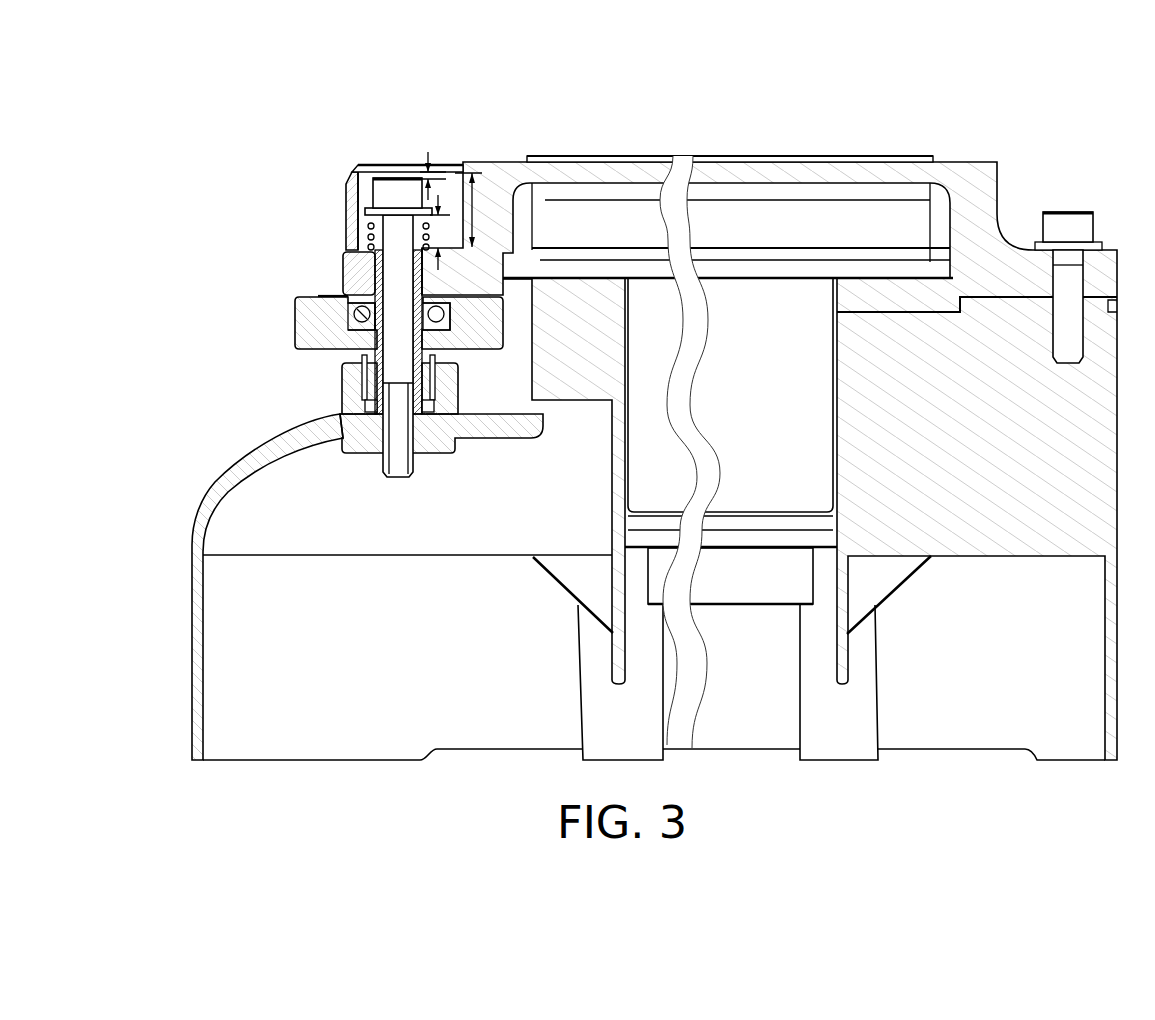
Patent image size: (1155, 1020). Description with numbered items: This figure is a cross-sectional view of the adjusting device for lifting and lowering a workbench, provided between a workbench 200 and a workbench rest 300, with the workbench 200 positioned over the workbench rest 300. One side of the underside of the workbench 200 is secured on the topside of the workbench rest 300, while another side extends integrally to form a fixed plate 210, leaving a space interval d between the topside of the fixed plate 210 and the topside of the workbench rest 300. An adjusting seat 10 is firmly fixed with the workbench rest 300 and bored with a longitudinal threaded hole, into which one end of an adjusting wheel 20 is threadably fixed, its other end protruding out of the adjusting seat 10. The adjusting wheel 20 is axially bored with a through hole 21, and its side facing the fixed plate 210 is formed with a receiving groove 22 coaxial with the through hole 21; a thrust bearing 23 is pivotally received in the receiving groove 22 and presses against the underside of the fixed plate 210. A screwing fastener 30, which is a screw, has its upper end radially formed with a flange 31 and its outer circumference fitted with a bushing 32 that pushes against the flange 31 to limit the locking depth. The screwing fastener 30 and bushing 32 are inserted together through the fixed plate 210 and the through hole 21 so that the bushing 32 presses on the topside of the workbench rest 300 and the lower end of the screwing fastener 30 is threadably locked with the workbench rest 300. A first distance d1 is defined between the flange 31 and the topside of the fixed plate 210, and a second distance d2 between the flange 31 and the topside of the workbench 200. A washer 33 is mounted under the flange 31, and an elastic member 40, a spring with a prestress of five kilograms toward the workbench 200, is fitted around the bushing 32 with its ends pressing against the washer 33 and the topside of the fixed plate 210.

The adjusting seat 10 is at (365, 404).
The adjusting wheel 20 is at (330, 307).
The through hole 21 is at (342, 367).
The receiving groove 22 is at (348, 320).
The thrust bearing 23 is at (340, 296).
The screwing fastener 30 is at (350, 195).
The flange 31 is at (366, 163).
The bushing 32 is at (374, 262).
The washer 33 is at (350, 193).
The elastic member 40 is at (358, 220).
The workbench 200 is at (604, 152).
The fixed plate 210 is at (435, 285).
The workbench rest 300 is at (222, 452).
The space interval d is at (478, 208).
The first distance d1 is at (441, 247).
The second distance d2 is at (386, 178).